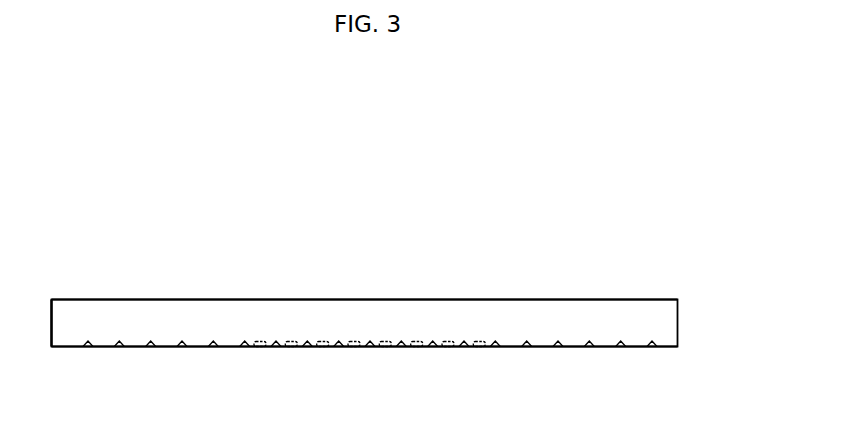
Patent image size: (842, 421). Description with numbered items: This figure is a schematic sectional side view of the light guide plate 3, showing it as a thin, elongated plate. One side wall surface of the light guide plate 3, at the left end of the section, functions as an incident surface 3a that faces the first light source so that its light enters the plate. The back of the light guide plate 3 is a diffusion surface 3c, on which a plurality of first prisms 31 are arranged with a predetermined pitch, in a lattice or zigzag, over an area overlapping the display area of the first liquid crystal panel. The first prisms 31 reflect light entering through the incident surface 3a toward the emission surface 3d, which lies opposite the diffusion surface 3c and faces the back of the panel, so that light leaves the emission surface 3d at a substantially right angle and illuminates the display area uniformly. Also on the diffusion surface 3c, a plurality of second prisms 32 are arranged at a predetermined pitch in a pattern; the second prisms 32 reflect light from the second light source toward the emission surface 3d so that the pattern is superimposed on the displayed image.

The light guide plate 3 is at (683, 340).
The incident surface 3a is at (50, 327).
The diffusion surface 3c is at (69, 348).
The emission surface 3d is at (62, 299).
The first prisms 31 is at (118, 348).
The second prisms 32 is at (290, 348).